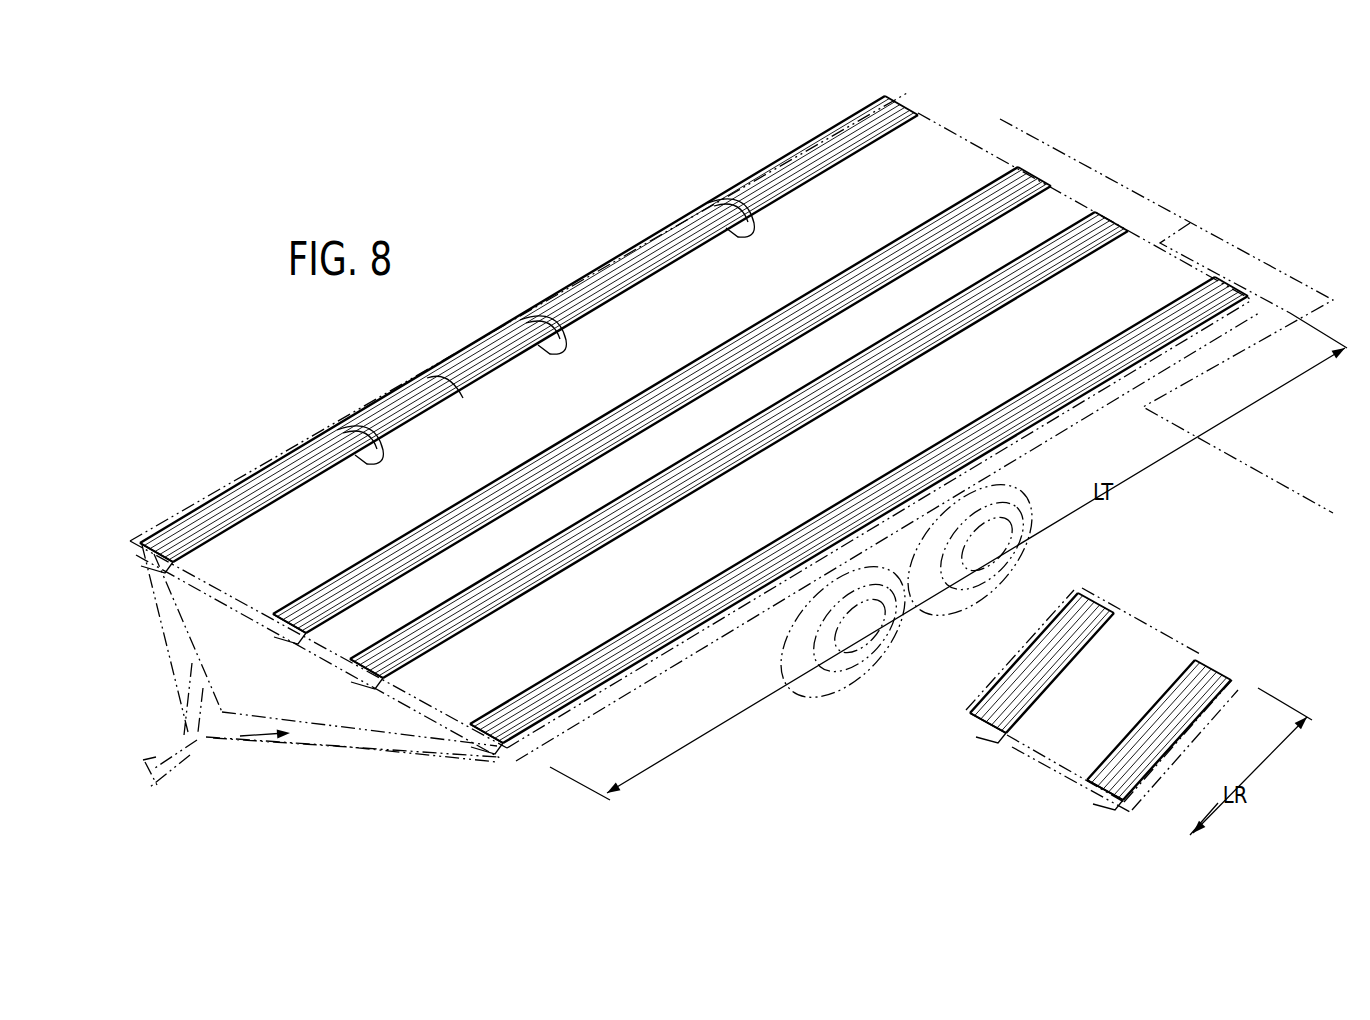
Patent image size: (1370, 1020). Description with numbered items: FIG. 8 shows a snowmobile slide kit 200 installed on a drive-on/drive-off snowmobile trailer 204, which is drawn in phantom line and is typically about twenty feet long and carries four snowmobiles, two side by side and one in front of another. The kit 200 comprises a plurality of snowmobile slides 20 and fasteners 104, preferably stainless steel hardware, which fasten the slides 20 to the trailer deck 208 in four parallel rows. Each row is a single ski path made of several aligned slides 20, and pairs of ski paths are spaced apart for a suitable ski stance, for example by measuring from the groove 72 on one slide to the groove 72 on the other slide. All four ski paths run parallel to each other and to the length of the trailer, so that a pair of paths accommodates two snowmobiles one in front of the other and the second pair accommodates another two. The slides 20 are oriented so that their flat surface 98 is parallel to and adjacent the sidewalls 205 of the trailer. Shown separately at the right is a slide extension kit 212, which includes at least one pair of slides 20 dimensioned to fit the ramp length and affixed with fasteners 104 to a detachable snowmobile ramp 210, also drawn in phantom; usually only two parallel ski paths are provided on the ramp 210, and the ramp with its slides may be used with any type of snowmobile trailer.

The snowmobile slide 20 is at (915, 257).
The groove 72 is at (140, 550).
The flat surface 98 is at (165, 528).
The fasteners 104 is at (897, 96).
The snowmobile slide kit 200 is at (503, 290).
The snowmobile trailer 204 is at (225, 603).
The sidewalls 205 is at (183, 508).
The trailer deck 208 is at (224, 602).
The snowmobile ramp 210 is at (1178, 647).
The slide extension kit 212 is at (1156, 700).